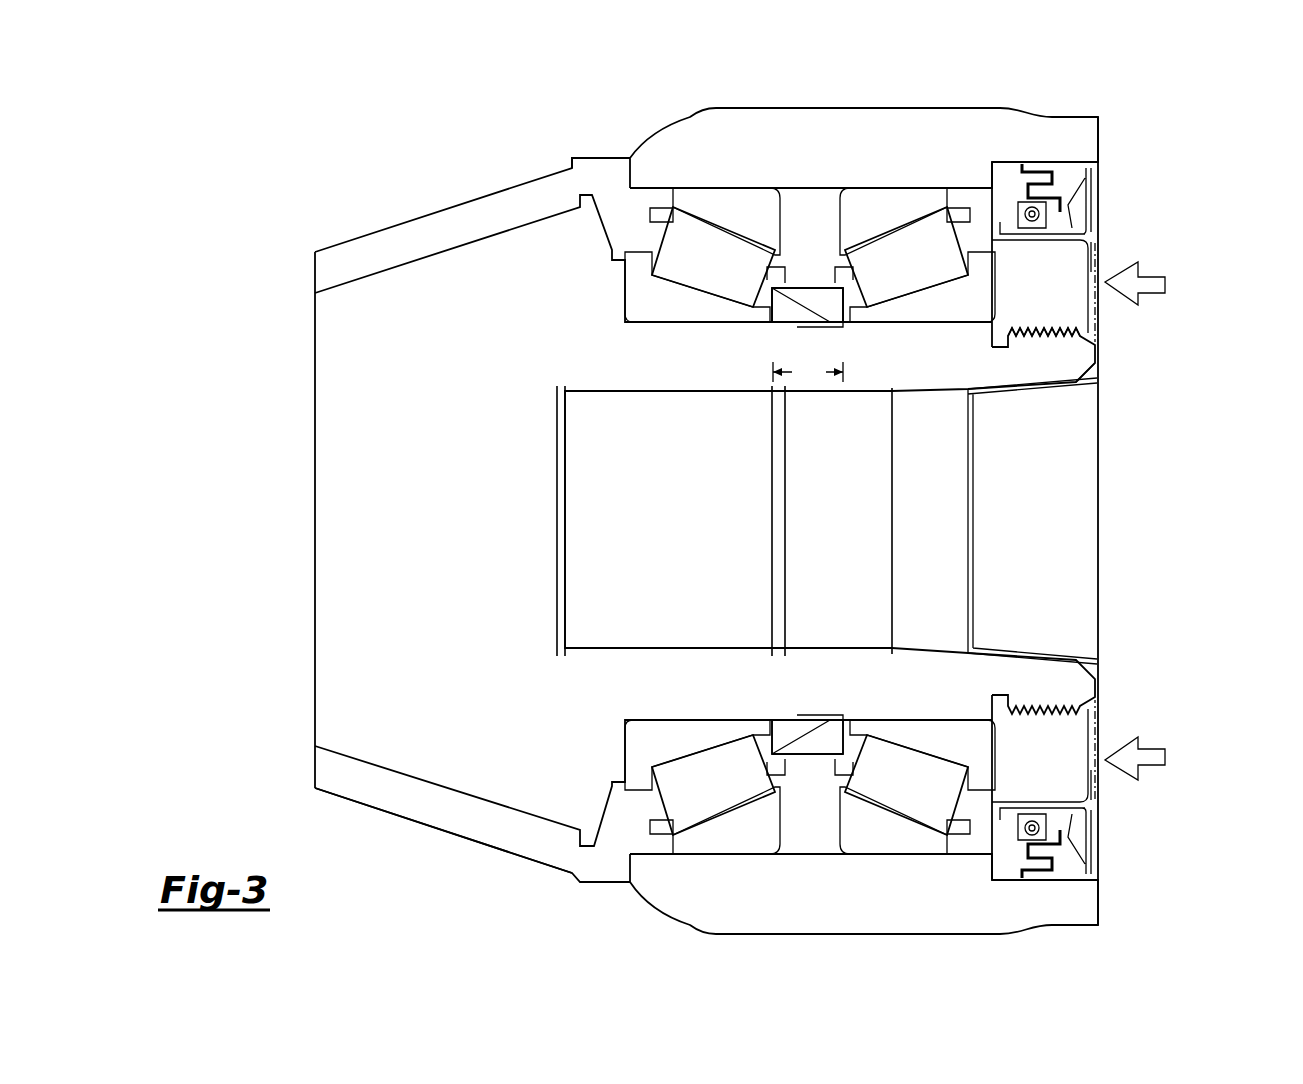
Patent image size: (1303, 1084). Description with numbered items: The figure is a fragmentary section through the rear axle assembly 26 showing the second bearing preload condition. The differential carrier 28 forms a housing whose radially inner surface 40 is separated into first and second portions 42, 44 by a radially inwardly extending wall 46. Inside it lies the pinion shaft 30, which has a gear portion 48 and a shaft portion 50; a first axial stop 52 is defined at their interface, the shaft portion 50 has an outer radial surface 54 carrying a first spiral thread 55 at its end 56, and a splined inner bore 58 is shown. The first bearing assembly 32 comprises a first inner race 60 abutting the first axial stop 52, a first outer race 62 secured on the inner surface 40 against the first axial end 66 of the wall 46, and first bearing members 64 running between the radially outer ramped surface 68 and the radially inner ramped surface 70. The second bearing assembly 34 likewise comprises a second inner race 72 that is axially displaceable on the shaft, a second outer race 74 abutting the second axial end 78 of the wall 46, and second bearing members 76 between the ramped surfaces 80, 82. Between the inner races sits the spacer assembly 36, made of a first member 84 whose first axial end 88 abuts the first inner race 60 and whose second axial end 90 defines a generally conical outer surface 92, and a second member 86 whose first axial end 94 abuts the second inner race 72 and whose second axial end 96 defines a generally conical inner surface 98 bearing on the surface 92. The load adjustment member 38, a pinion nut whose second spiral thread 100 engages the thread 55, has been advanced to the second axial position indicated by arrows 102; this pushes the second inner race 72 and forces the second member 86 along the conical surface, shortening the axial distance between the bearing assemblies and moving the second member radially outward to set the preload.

The rear axle assembly 26 is at (703, 508).
The differential carrier 28 is at (864, 500).
The pinion shaft 30 is at (302, 262).
The first bearing assembly 32 is at (664, 213).
The second bearing assembly 34 is at (921, 212).
The spacer assembly 36 is at (835, 282).
The load adjustment member 38 is at (1093, 256).
The radially inner surface 40 is at (581, 172).
The first portion 42 is at (724, 847).
The second portion 44 is at (915, 840).
The radially inwardly extending wall 46 is at (830, 752).
The gear portion 48 is at (383, 812).
The shaft portion 50 is at (948, 670).
The first axial stop 52 is at (640, 760).
The outer radial surface 54 is at (950, 730).
The first spiral thread 55 is at (1072, 324).
The end 56 is at (1082, 367).
The splined inner bore 58 is at (605, 645).
The first inner race 60 is at (654, 301).
The first outer race 62 is at (778, 187).
The first bearing members 64 is at (699, 278).
The first axial end 66 is at (775, 820).
The radially outer ramped surface 68 is at (680, 286).
The radially inner ramped surface 70 is at (738, 228).
The second inner race 72 is at (993, 318).
The second outer race 74 is at (842, 187).
The second bearing members 76 is at (899, 272).
The second axial end 78 is at (852, 825).
The radially outer ramped surface 80 is at (897, 288).
The radially inner ramped surface 82 is at (913, 222).
The first member 84 is at (790, 320).
The second member 86 is at (815, 288).
The first axial end 88 is at (770, 312).
The second axial end 90 is at (826, 324).
The generally conical outer surface 92 is at (801, 288).
The first axial end 94 is at (860, 735).
The second axial end 96 is at (808, 760).
The generally conical inner surface 98 is at (785, 724).
The second spiral thread 100 is at (1053, 325).
The arrows 102 is at (1165, 284).